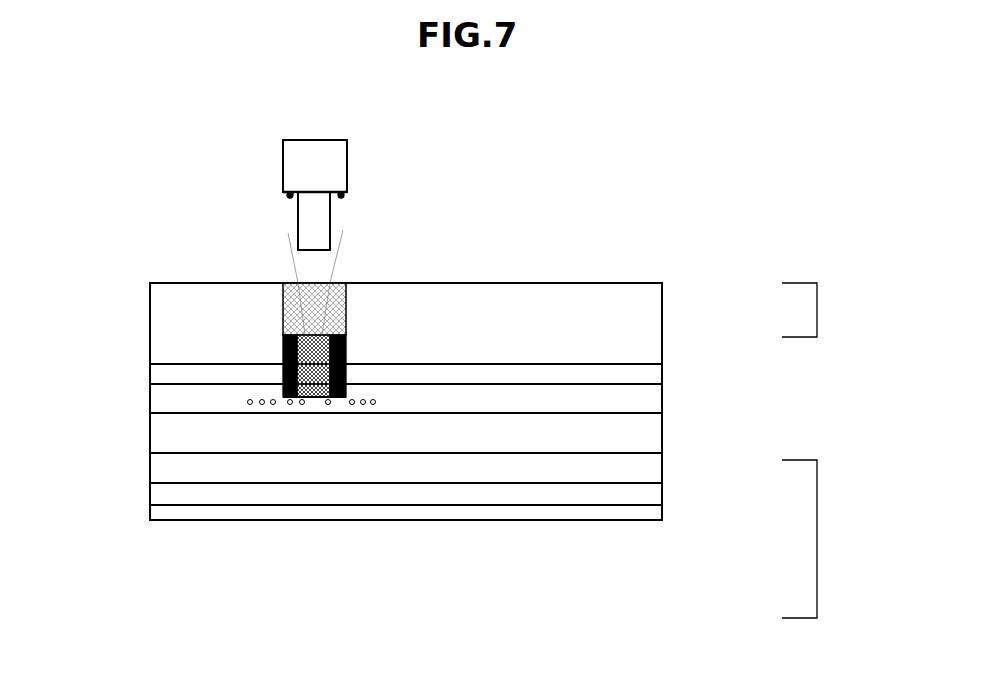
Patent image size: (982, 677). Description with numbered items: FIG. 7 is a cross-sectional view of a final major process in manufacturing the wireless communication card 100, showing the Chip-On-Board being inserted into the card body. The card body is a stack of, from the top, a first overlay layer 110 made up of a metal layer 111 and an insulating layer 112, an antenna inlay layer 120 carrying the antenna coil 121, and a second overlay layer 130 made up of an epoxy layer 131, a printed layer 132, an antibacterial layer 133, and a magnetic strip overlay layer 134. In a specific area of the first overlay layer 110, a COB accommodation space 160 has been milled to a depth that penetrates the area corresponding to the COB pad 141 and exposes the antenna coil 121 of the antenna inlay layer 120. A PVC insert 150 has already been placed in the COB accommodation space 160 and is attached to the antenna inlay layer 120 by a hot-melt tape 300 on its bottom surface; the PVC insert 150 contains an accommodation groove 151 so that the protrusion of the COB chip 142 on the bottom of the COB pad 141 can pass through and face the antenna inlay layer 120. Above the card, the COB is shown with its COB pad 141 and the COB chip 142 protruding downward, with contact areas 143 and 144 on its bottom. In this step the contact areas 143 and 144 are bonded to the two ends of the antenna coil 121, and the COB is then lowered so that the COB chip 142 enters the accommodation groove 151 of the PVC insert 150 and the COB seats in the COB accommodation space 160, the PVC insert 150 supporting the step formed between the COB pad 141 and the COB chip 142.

The wireless communication card 100 is at (356, 306).
The first overlay layer 110 is at (829, 310).
The metal layer 111 is at (662, 323).
The insulating layer 112 is at (662, 375).
The antenna inlay layer 120 is at (662, 400).
The antenna coil 121 is at (297, 247).
The second overlay layer 130 is at (829, 539).
The epoxy layer 131 is at (662, 437).
The printed layer 132 is at (662, 470).
The antibacterial layer 133 is at (662, 497).
The magnetic strip overlay layer 134 is at (648, 512).
The COB pad 141 is at (337, 153).
The COB chip 142 is at (320, 223).
The contact area 143 is at (287, 195).
The contact area 144 is at (345, 195).
The PVC insert 150 is at (282, 377).
The accommodation groove 151 is at (350, 348).
The COB accommodation space 160 is at (290, 300).
The hot-melt tape 300 is at (287, 402).